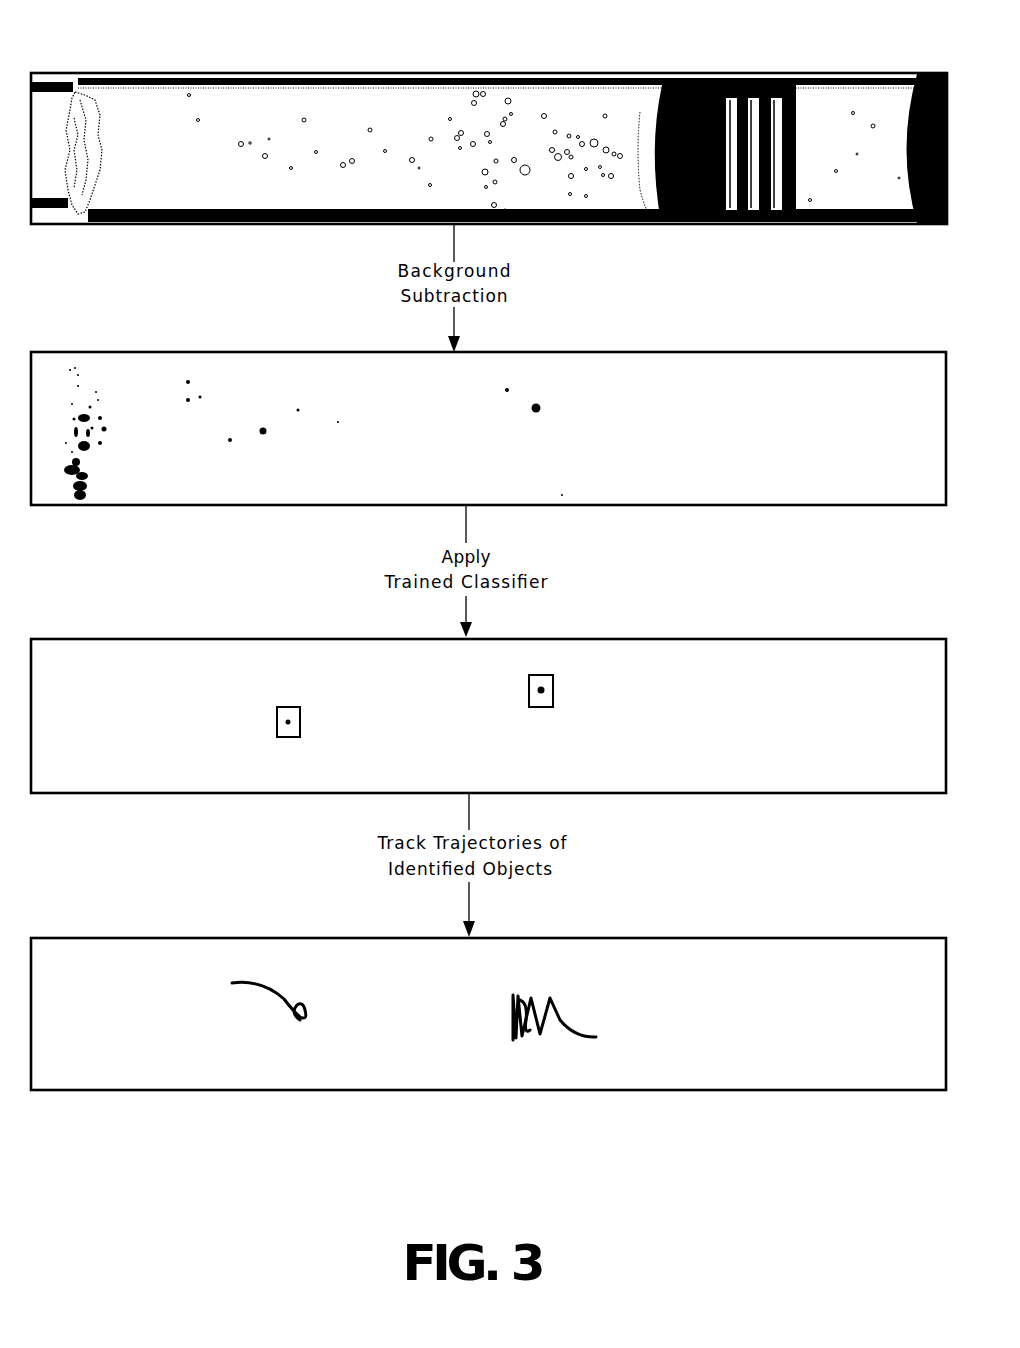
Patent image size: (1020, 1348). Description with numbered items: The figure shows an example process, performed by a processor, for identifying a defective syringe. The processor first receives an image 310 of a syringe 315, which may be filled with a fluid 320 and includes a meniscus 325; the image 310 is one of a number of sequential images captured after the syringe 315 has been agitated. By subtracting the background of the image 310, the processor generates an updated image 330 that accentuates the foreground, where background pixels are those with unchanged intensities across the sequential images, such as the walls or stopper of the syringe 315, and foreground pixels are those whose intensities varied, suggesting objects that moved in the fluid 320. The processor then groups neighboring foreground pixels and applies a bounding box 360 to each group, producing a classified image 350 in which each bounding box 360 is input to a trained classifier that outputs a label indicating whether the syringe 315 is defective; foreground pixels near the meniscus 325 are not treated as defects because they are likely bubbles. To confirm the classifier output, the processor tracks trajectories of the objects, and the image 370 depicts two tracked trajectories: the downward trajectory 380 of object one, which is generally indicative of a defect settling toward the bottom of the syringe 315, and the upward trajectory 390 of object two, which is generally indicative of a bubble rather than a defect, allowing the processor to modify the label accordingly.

The image 310 is at (95, 62).
The syringe 315 is at (612, 227).
The fluid 320 is at (628, 110).
The meniscus 325 is at (86, 210).
The updated image 330 is at (105, 338).
The classified image 350 is at (105, 626).
The bounding box 360 is at (278, 737).
The image 370 is at (107, 927).
The trajectory of object 1 380 is at (580, 1038).
The trajectory of object 2 390 is at (247, 998).